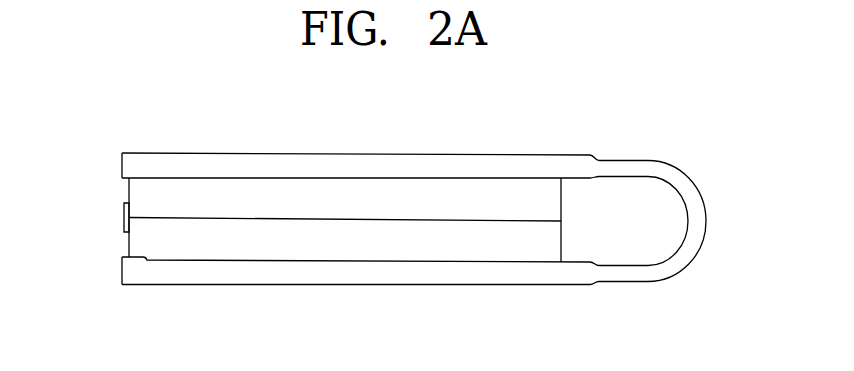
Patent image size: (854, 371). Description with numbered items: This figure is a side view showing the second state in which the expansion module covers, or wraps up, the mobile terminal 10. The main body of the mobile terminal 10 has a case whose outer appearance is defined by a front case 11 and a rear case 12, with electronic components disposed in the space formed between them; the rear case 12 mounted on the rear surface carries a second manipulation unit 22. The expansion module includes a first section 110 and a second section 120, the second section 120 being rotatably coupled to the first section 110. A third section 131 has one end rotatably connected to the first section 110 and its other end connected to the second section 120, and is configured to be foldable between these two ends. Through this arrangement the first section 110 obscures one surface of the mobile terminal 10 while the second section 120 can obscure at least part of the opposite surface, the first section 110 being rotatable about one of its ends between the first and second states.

The mobile terminal 10 is at (104, 190).
The first section 110 is at (181, 127).
The second section 120 is at (178, 308).
The third section 131 is at (680, 180).
The front case 11 is at (292, 233).
The rear case 12 is at (242, 192).
The second manipulation unit 22 is at (124, 218).